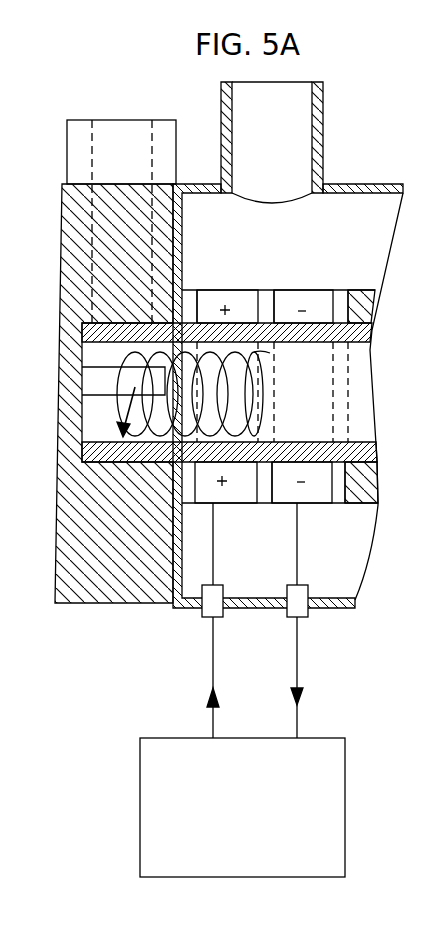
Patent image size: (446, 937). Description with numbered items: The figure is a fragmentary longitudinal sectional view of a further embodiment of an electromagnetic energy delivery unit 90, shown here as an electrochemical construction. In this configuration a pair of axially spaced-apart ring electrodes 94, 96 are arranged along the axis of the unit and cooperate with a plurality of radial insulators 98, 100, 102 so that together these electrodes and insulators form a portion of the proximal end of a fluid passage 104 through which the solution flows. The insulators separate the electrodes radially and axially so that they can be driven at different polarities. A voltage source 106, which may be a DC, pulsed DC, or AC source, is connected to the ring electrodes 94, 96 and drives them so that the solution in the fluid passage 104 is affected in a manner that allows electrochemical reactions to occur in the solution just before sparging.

The electromagnetic energy delivery unit 90 is at (237, 349).
The ring electrode 94 is at (220, 290).
The ring electrode 96 is at (296, 290).
The radial insulator 98 is at (188, 504).
The radial insulator 100 is at (265, 504).
The radial insulator 102 is at (339, 504).
The fluid passage 104 is at (236, 466).
The voltage source 106 is at (149, 737).